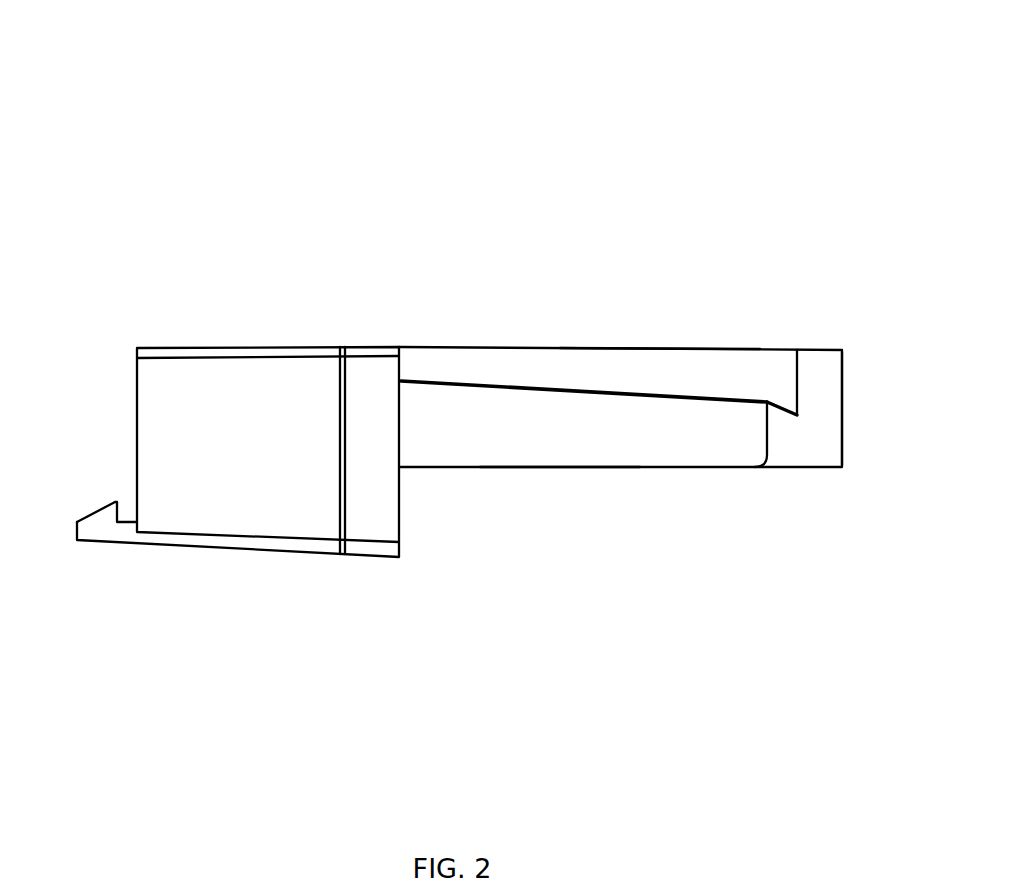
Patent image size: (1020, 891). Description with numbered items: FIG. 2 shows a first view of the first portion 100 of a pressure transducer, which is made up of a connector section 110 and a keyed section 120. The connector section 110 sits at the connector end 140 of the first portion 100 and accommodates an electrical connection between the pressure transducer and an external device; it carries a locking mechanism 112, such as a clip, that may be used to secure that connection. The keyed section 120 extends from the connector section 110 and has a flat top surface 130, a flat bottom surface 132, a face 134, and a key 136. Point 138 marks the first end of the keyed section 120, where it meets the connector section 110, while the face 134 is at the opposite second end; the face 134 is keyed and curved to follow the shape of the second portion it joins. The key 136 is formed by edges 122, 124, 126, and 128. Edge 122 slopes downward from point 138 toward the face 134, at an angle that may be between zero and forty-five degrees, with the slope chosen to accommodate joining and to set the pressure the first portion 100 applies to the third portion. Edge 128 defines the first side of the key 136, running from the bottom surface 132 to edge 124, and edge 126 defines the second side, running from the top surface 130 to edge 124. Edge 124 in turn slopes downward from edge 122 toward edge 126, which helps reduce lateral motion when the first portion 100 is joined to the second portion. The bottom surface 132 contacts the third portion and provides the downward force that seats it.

The first portion 100 is at (797, 67).
The connector section 110 is at (77, 618).
The locking mechanism 112 is at (108, 528).
The keyed section 120 is at (844, 618).
The edge 122 is at (463, 383).
The edge 124 is at (796, 415).
The edge 126 is at (797, 377).
The edge 128 is at (767, 433).
The top surface 130 is at (640, 348).
The bottom surface 132 is at (553, 467).
The face 134 is at (820, 368).
The key 136 is at (687, 443).
The point 138 is at (399, 347).
The connector end 140 is at (136, 356).